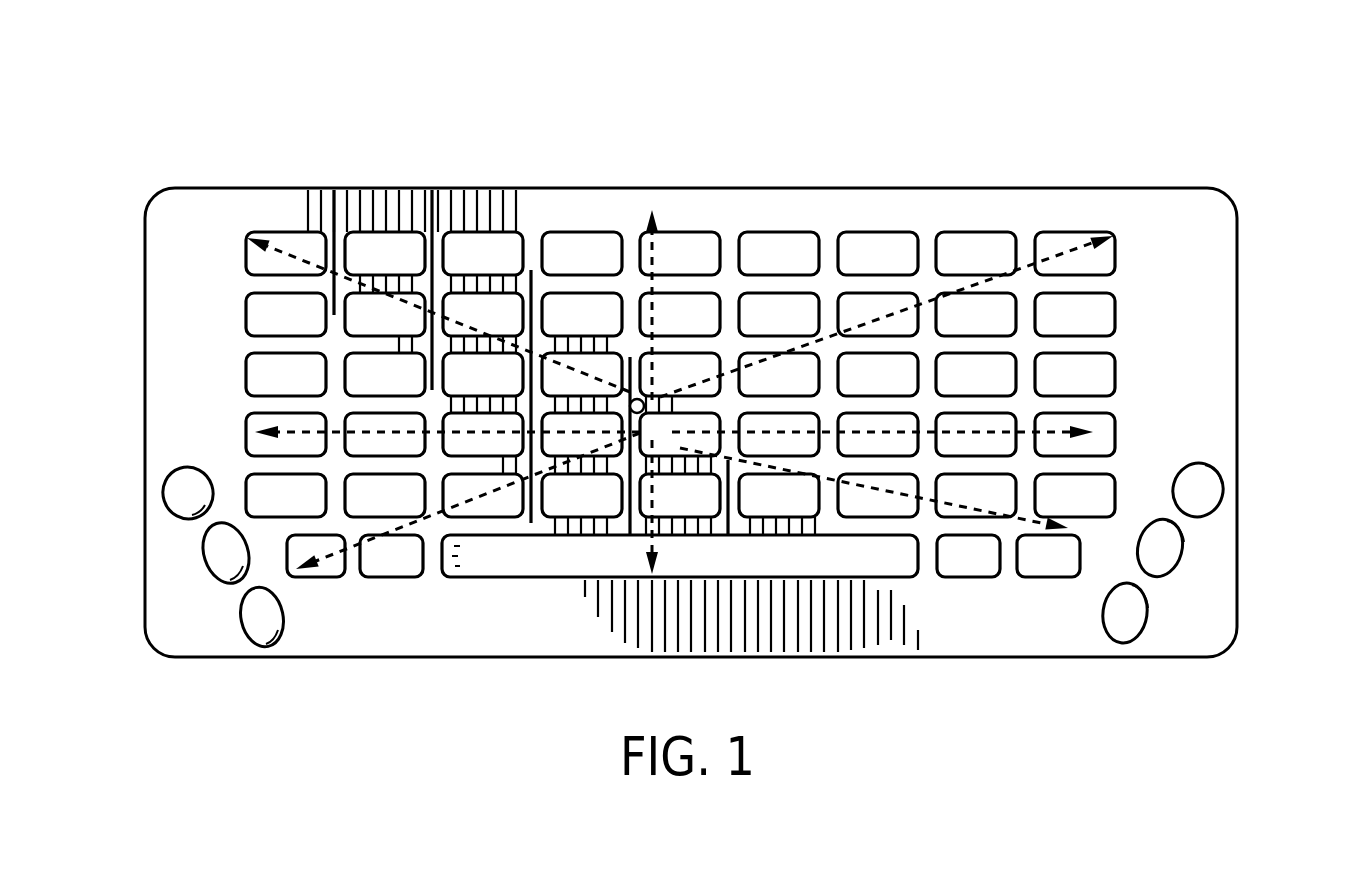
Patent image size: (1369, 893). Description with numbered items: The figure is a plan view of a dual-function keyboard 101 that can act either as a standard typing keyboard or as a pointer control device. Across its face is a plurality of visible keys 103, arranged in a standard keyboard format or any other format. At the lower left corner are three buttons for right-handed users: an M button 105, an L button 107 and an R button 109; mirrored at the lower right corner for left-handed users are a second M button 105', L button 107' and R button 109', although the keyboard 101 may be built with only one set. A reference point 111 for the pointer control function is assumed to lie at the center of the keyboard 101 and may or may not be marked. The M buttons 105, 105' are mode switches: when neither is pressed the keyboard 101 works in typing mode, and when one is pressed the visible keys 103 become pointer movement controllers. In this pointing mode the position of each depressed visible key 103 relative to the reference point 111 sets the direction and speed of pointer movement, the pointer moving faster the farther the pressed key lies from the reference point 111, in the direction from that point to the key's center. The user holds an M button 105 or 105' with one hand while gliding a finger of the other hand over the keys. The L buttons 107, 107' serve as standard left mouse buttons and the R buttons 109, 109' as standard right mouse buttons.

The dual-function keyboard 101 is at (1153, 188).
The visible keys 103 is at (787, 245).
The M button 105 is at (148, 493).
The L button 107 is at (167, 553).
The R button 109 is at (183, 616).
The M button 105' is at (1242, 489).
The L button 107' is at (1225, 547).
The R button 109' is at (1210, 613).
The reference point 111 is at (640, 399).